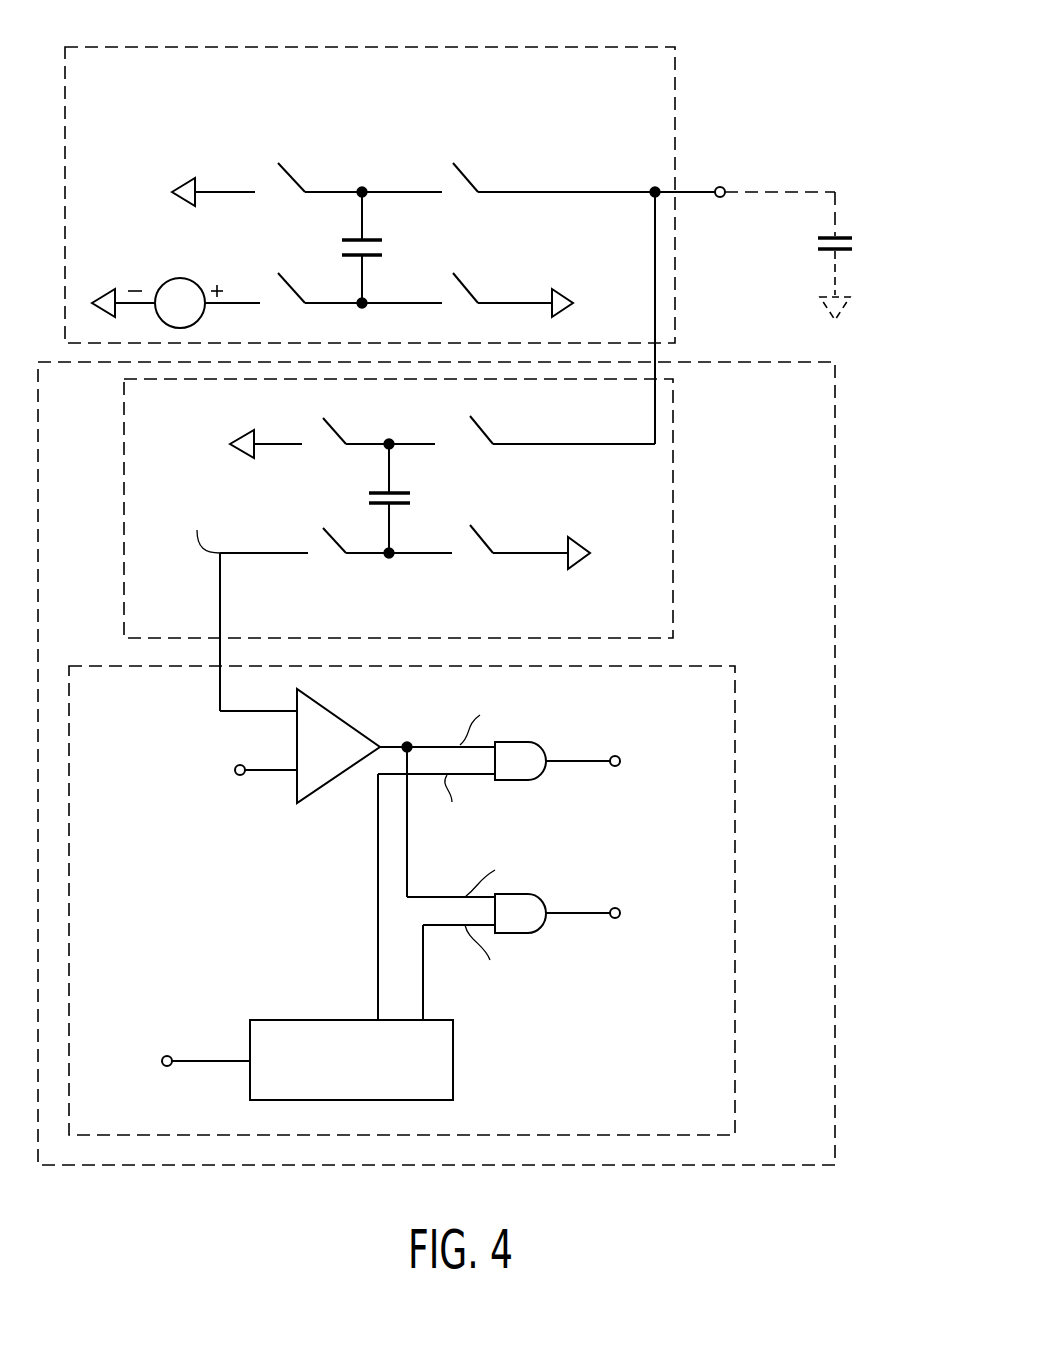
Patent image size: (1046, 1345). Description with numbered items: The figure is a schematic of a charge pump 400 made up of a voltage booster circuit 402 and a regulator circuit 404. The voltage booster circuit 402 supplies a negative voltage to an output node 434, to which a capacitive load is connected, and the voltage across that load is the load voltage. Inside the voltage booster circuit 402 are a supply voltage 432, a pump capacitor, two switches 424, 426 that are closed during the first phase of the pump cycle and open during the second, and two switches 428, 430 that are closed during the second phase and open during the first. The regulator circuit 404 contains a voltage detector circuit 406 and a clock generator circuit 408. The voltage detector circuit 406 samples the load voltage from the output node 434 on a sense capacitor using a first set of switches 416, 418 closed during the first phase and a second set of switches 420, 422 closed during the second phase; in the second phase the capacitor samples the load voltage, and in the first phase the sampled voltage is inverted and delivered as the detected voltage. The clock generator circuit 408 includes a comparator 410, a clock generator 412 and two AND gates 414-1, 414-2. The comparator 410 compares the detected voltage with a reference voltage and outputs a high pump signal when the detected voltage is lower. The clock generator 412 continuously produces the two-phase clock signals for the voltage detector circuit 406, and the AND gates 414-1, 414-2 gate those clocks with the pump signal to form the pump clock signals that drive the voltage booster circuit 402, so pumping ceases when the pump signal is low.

The charge pump 400 is at (775, 20).
The voltage booster circuit 402 is at (458, 47).
The regulator circuit 404 is at (835, 680).
The voltage detector circuit 406 is at (673, 504).
The clock generator circuit 408 is at (735, 913).
The comparator 410 is at (297, 793).
The clock generator 412 is at (453, 1058).
The AND gate 414-1 is at (535, 780).
The AND gate 414-2 is at (535, 933).
The switch 416 is at (334, 434).
The switch 418 is at (334, 543).
The switch 420 is at (481, 431).
The switch 422 is at (483, 538).
The switch 424 is at (472, 174).
The switch 426 is at (472, 287).
The switch 428 is at (293, 176).
The switch 430 is at (290, 293).
The supply voltage 432 is at (163, 284).
The output node 434 is at (723, 197).